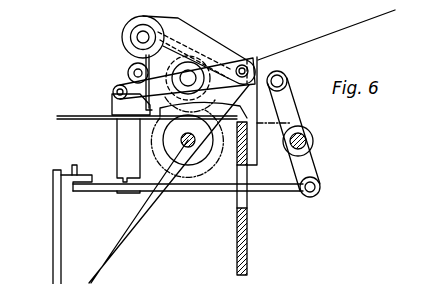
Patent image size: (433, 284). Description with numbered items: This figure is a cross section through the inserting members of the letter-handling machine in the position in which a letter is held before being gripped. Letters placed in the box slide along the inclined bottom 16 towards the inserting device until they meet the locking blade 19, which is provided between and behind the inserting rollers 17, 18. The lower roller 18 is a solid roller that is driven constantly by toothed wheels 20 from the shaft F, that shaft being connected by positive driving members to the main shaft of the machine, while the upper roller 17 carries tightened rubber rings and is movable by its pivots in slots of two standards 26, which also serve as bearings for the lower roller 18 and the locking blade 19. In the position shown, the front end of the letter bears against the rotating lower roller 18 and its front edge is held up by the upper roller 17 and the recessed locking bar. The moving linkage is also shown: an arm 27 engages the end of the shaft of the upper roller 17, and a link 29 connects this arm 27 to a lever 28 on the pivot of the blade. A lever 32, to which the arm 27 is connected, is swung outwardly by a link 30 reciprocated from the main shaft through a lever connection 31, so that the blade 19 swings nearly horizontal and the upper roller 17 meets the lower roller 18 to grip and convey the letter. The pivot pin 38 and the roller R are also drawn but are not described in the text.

The bottom 16 is at (344, 27).
The upper roller 17 is at (125, 38).
The lower roller 18 is at (206, 59).
The locking blade 19 is at (112, 108).
The toothed wheels 20 is at (210, 106).
The standards 26 is at (185, 27).
The arm 27 is at (193, 60).
The lever 28 is at (127, 74).
The link 29 is at (140, 58).
The link 30 is at (54, 245).
The lever connection 31 is at (160, 192).
The lever 32 is at (298, 97).
The pivot pin 38 is at (112, 91).
The roller R is at (307, 143).
The shaft F is at (172, 164).